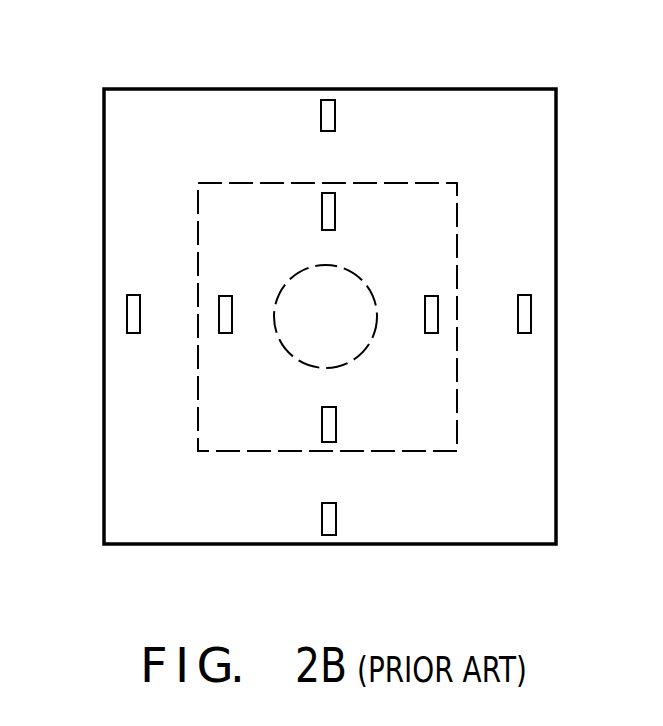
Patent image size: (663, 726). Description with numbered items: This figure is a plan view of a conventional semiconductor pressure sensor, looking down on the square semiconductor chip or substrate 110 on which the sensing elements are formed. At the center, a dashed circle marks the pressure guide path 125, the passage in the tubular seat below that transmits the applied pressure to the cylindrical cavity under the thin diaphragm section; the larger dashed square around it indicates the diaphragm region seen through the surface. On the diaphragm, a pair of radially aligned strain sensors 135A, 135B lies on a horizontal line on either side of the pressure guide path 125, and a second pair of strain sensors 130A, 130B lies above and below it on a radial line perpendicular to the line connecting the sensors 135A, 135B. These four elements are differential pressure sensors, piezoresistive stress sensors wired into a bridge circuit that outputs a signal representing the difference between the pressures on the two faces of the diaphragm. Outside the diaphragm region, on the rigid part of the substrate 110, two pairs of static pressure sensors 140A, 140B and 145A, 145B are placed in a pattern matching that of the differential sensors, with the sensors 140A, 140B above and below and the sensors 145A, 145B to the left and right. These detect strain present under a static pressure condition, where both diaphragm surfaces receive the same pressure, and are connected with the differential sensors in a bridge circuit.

The substrate 110 is at (485, 90).
The pressure guide path 125 is at (373, 299).
The strain sensor 130A is at (335, 204).
The strain sensor 130B is at (336, 430).
The strain sensor 135A is at (219, 318).
The strain sensor 135B is at (438, 320).
The static pressure sensor 140A is at (333, 104).
The static pressure sensor 140B is at (336, 525).
The static pressure sensor 145A is at (128, 308).
The static pressure sensor 145B is at (531, 309).